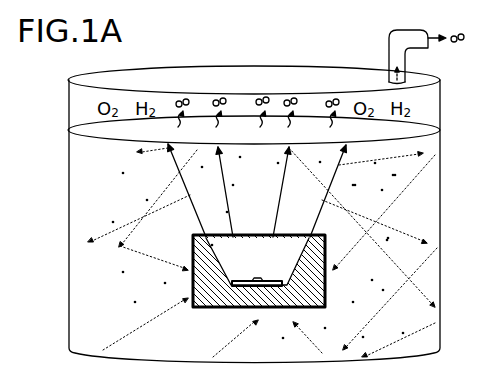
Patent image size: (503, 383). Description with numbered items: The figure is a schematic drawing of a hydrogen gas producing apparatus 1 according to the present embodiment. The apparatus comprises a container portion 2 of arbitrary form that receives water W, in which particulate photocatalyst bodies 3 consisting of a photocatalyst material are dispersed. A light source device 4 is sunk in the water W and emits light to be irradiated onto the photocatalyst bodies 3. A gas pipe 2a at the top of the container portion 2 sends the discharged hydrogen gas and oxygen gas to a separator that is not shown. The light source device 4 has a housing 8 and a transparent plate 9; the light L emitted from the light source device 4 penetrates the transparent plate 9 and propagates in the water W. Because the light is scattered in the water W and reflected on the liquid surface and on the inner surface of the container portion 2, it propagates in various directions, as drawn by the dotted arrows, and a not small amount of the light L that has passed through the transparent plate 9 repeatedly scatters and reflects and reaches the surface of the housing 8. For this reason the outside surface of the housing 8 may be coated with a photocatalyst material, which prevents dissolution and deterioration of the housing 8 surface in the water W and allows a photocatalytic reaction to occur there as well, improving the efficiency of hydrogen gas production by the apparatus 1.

The hydrogen gas producing apparatus 1 is at (188, 47).
The container portion 2 is at (68, 222).
The gas pipe 2a is at (389, 55).
The photocatalyst bodies 3 is at (107, 295).
The light source device 4 is at (218, 308).
The housing 8 is at (192, 243).
The transparent plate 9 is at (283, 233).
The light L is at (183, 184).
The water W is at (102, 169).